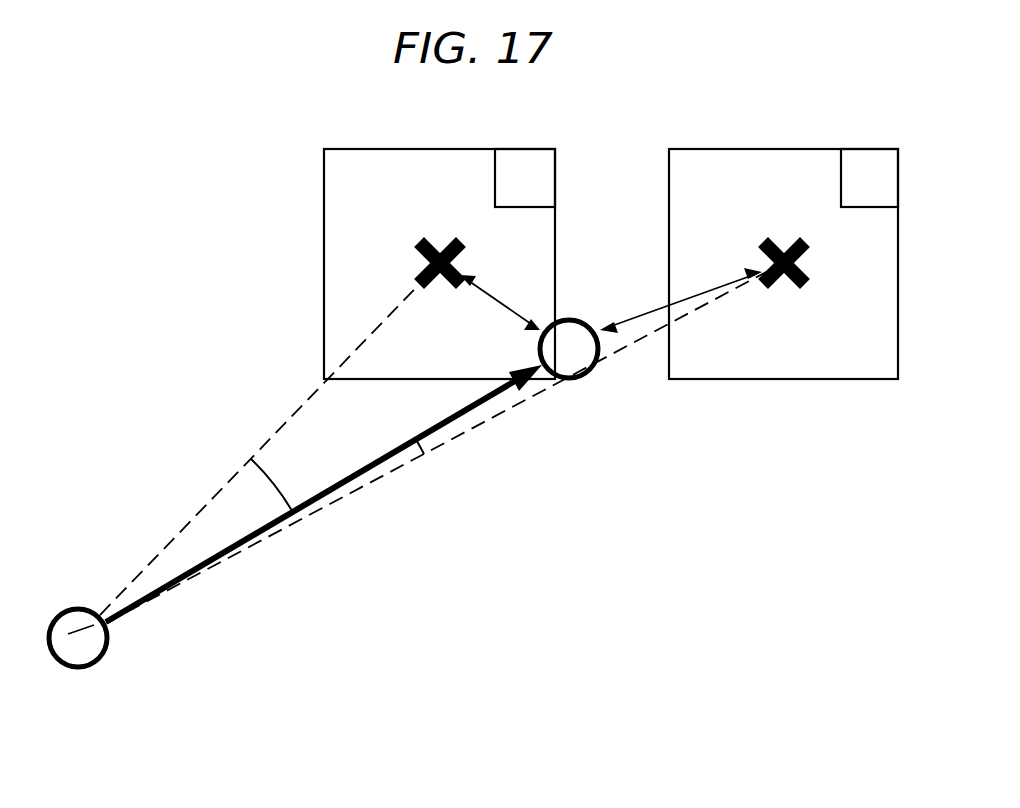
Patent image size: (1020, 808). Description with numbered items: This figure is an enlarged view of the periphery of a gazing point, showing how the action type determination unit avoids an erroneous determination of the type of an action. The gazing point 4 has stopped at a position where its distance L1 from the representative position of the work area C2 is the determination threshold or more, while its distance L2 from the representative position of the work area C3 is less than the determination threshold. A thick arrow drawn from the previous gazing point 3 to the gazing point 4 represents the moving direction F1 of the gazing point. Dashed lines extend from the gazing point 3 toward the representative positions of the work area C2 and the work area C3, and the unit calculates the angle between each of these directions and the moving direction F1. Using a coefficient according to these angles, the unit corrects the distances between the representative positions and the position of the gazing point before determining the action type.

The gazing point 3 is at (78, 638).
The gazing point 4 is at (569, 349).
The work area C2 is at (752, 218).
The work area C3 is at (400, 245).
The distance L1 is at (681, 300).
The distance L2 is at (500, 293).
The moving direction F1 is at (367, 466).